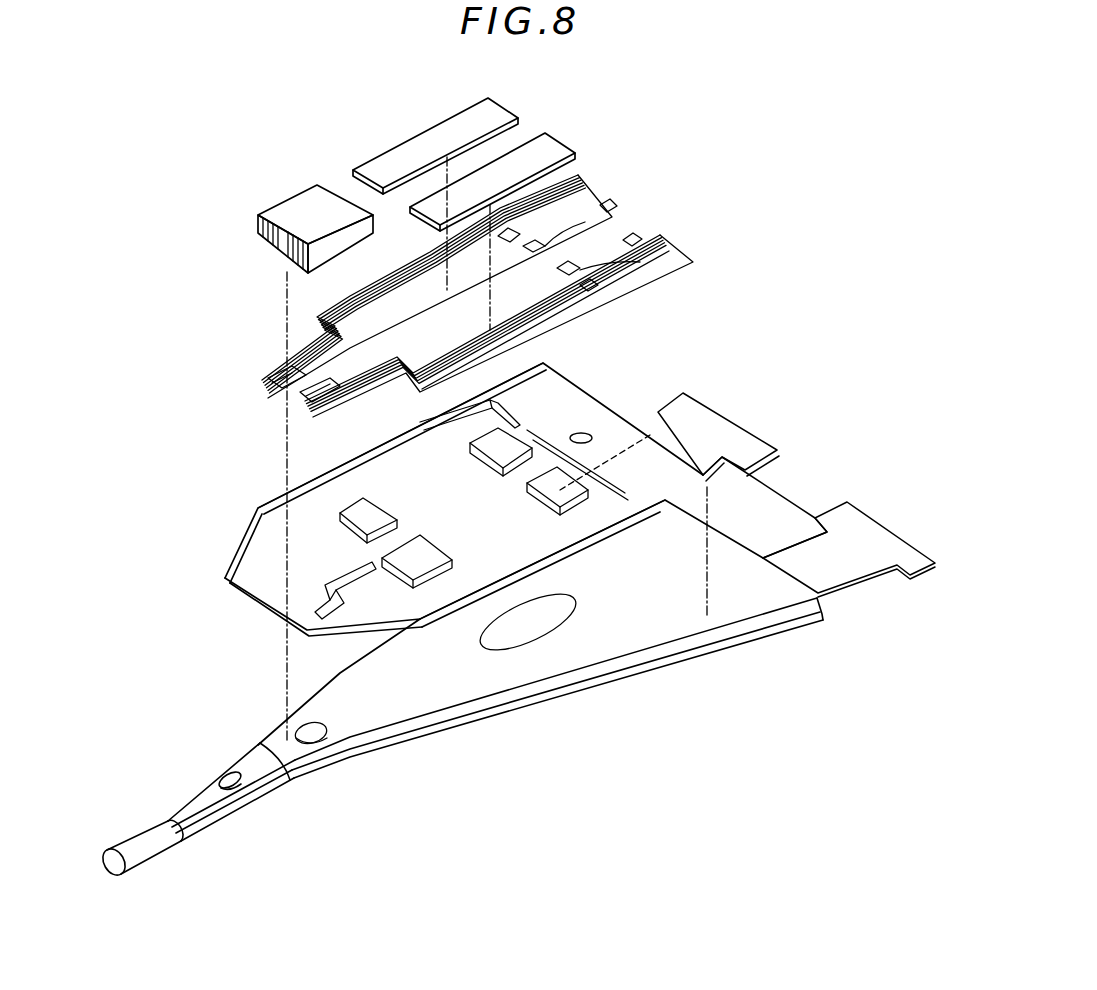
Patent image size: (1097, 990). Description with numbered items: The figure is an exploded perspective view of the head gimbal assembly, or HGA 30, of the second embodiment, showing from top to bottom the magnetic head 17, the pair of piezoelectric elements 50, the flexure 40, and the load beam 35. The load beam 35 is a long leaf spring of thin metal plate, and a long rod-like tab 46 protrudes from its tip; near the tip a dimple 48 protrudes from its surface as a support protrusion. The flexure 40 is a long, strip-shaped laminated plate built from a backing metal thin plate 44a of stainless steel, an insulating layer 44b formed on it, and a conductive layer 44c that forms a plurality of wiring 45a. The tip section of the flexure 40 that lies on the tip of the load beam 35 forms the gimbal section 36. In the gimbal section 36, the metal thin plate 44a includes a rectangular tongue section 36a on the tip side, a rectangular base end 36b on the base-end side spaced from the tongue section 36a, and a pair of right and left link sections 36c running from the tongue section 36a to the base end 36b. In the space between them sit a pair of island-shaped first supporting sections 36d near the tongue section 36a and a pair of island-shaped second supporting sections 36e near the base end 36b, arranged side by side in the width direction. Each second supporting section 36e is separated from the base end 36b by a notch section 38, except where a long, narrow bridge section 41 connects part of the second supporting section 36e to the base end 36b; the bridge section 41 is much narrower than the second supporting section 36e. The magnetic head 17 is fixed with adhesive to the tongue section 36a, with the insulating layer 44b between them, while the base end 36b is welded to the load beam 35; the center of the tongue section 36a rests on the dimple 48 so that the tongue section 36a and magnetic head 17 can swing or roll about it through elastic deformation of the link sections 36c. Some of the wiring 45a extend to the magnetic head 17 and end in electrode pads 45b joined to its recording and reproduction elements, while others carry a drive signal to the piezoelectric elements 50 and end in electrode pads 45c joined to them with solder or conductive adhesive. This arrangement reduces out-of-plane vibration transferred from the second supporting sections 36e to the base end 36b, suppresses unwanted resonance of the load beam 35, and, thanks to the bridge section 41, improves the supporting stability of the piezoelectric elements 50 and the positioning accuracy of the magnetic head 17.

The magnetic head 17 is at (291, 206).
The piezoelectric elements 50 is at (490, 110).
The HGA 30 is at (726, 206).
The metal thin plate 44a is at (572, 393).
The insulating layer 44b is at (600, 192).
The conductive layer 44c is at (620, 294).
The wiring 45a is at (566, 224).
The electrode pads 45b is at (262, 380).
The electrode pads 45c is at (600, 228).
The gimbal section 36 is at (316, 441).
The tongue section 36a is at (354, 572).
The base end 36b is at (638, 467).
The link sections 36c is at (315, 488).
The first supporting sections 36d is at (341, 516).
The second supporting sections 36e is at (490, 452).
The notch section 38 is at (518, 420).
The bridge section 41 is at (505, 430).
The flexure 40 is at (737, 388).
The load beam 35 is at (625, 643).
The dimple 48 is at (320, 744).
The tab 46 is at (141, 850).